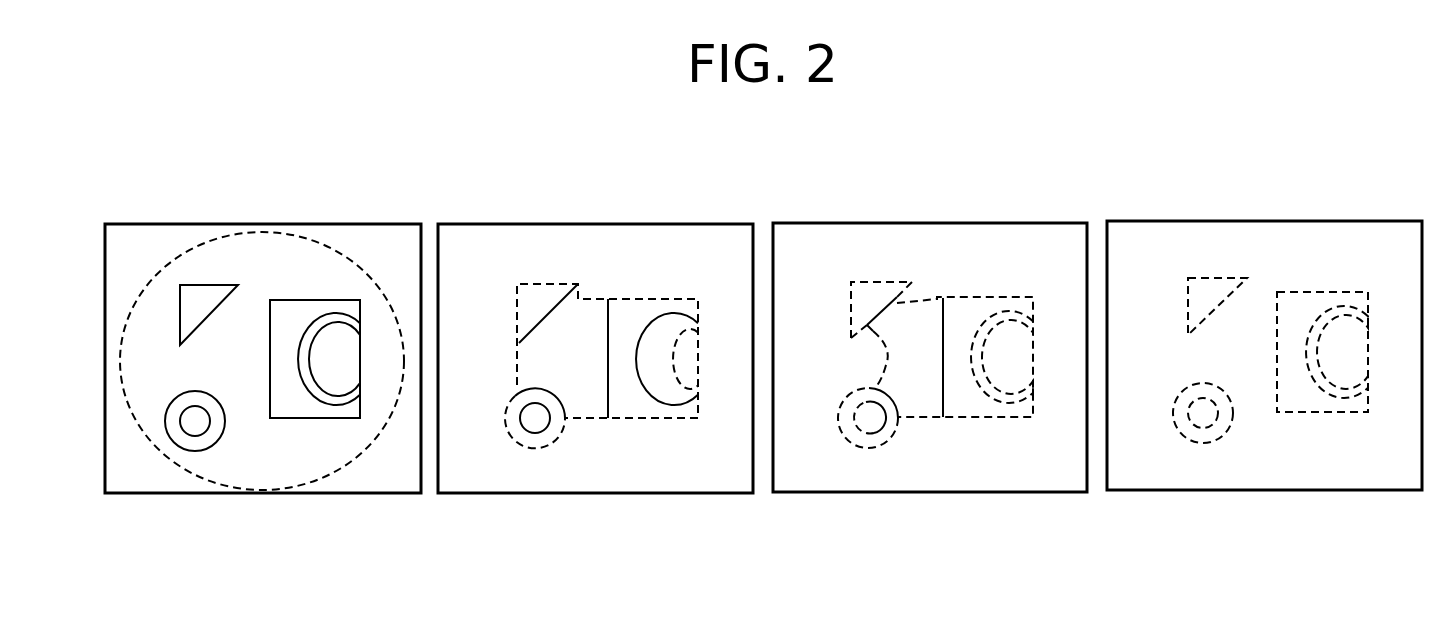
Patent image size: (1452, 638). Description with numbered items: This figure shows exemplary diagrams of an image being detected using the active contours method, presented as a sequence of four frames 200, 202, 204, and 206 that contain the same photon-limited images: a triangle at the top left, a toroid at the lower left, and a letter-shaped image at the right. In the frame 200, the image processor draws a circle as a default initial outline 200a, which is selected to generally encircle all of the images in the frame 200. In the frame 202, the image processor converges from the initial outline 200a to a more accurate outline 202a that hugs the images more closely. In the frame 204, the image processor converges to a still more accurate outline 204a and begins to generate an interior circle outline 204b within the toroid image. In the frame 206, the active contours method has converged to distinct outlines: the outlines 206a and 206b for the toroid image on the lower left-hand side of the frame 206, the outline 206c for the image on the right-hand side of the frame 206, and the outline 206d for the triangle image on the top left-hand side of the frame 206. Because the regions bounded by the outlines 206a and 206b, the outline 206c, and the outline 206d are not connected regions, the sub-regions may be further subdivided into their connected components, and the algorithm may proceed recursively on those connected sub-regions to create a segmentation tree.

The frame 200 is at (368, 223).
The initial outline 200a is at (172, 458).
The frame 202 is at (699, 223).
The outline 202a is at (535, 450).
The frame 204 is at (1043, 221).
The outline 204a is at (987, 419).
The interior circle outline 204b is at (871, 432).
The frame 206 is at (1375, 219).
The outline 206a is at (1198, 442).
The outline 206b is at (1212, 424).
The outline 206c is at (1330, 413).
The outline 206d is at (1205, 277).